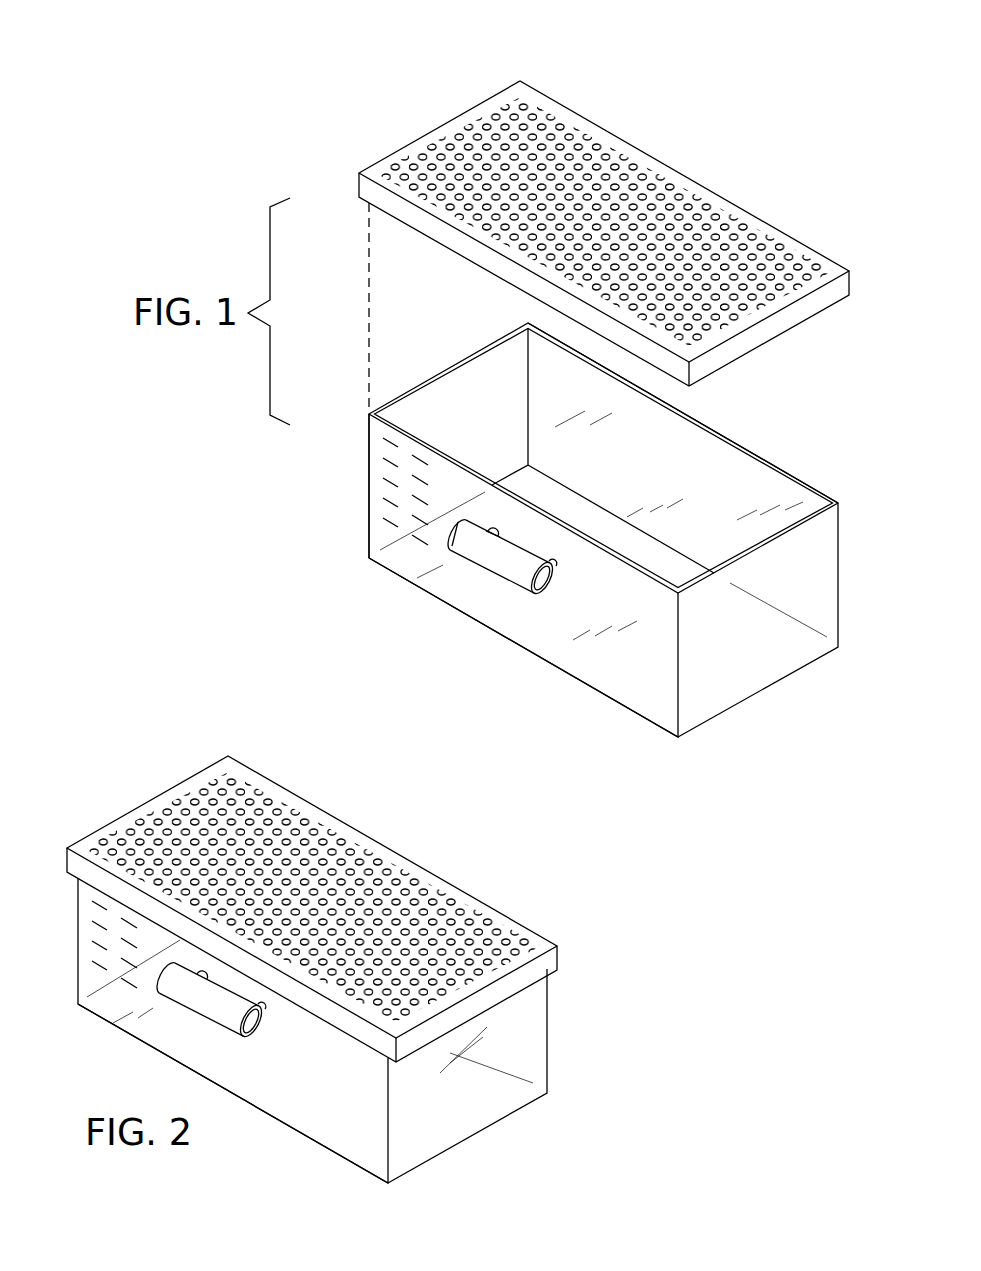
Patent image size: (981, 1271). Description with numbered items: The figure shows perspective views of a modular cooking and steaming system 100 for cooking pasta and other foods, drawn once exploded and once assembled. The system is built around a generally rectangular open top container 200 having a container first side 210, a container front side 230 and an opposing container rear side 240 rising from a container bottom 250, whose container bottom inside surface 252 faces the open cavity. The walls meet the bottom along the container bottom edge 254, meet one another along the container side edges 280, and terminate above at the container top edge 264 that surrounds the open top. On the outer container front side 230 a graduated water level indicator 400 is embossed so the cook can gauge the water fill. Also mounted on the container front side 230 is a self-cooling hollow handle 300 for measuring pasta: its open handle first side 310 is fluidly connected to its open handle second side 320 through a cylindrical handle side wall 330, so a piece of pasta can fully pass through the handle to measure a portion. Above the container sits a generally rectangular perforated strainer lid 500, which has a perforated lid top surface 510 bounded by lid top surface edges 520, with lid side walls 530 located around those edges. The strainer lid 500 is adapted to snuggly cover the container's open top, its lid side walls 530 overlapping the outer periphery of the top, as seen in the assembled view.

In FIG. 1, the modular cooking and steaming system 100 is at (325, 85).
In FIG. 2, the modular cooking and steaming system 100 is at (145, 750).
In FIG. 1, the container 200 is at (590, 543).
In FIG. 2, the container 200 is at (356, 1049).
In FIG. 1, the container first side 210 is at (767, 642).
In FIG. 1, the container front side 230 is at (550, 632).
In FIG. 1, the container rear side 240 is at (733, 440).
In FIG. 2, the container bottom 250 is at (440, 1153).
In FIG. 1, the container bottom inside surface 252 is at (680, 566).
In FIG. 1, the container bottom edge 254 is at (600, 694).
In FIG. 1, the container top edge 264 is at (779, 462).
In FIG. 1, the container side edge 280 is at (362, 512).
In FIG. 1, the handle 300 is at (443, 600).
In FIG. 2, the handle 300 is at (211, 1001).
In FIG. 1, the handle first side 310 is at (522, 572).
In FIG. 1, the handle second side 320 is at (462, 560).
In FIG. 1, the handle side wall 330 is at (493, 551).
In FIG. 1, the water level indicator 400 is at (378, 477).
In FIG. 1, the strainer lid 500 is at (637, 200).
In FIG. 2, the strainer lid 500 is at (397, 862).
In FIG. 1, the lid top surface 510 is at (622, 166).
In FIG. 1, the lid top surface edge 520 is at (728, 207).
In FIG. 1, the lid side wall 530 is at (822, 301).